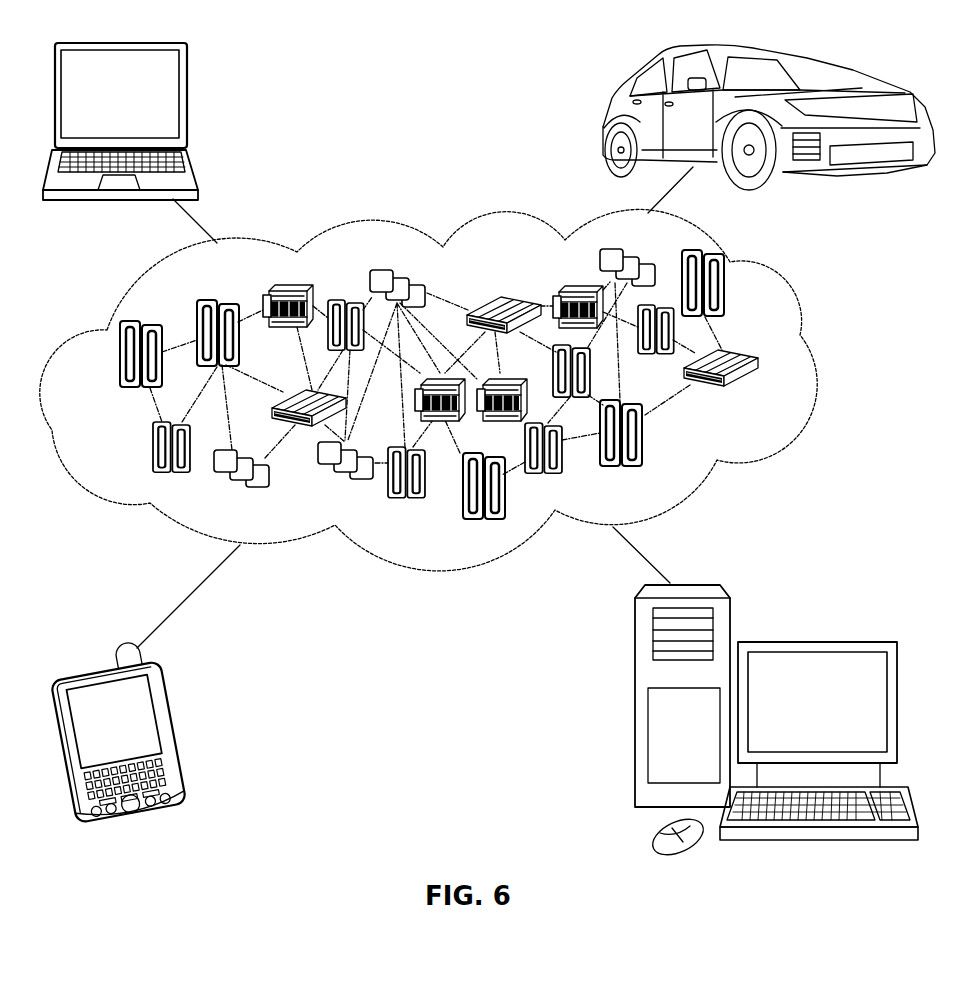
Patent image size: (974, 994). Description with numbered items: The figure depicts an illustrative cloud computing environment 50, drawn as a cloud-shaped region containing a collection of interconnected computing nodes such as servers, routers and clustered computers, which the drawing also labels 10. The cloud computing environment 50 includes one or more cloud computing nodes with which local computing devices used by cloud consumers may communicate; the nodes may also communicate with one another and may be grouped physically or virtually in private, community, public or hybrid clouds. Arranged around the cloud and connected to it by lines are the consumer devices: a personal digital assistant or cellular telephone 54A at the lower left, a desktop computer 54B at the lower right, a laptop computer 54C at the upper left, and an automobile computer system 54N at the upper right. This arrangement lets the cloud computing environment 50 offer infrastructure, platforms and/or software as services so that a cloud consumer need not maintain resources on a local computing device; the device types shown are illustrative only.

The cloud computing nodes 10 is at (760, 392).
The cloud computing environment 50 is at (817, 362).
The personal digital assistant or cellular telephone 54A is at (177, 730).
The desktop computer 54B is at (815, 640).
The laptop computer 54C is at (187, 102).
The automobile computer system 54N is at (604, 117).